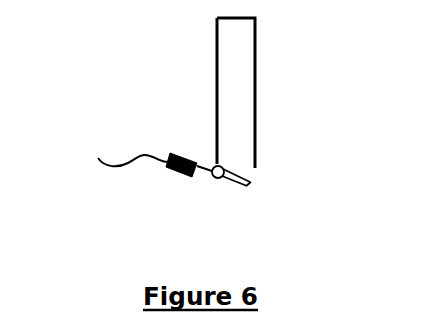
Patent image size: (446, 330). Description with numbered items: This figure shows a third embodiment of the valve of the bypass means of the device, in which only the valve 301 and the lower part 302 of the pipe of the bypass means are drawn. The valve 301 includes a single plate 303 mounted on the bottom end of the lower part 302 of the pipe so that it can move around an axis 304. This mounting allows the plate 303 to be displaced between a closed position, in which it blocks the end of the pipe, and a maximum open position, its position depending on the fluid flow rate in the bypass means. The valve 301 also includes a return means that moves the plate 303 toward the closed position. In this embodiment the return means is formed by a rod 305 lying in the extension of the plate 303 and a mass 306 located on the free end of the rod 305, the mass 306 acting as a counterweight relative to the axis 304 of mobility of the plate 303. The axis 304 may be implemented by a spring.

The valve 301 is at (188, 132).
The lower part of the pipe 302 is at (256, 75).
The plate 303 is at (244, 187).
The axis 304 is at (250, 184).
The rod 305 is at (197, 174).
The mass 306 is at (112, 156).